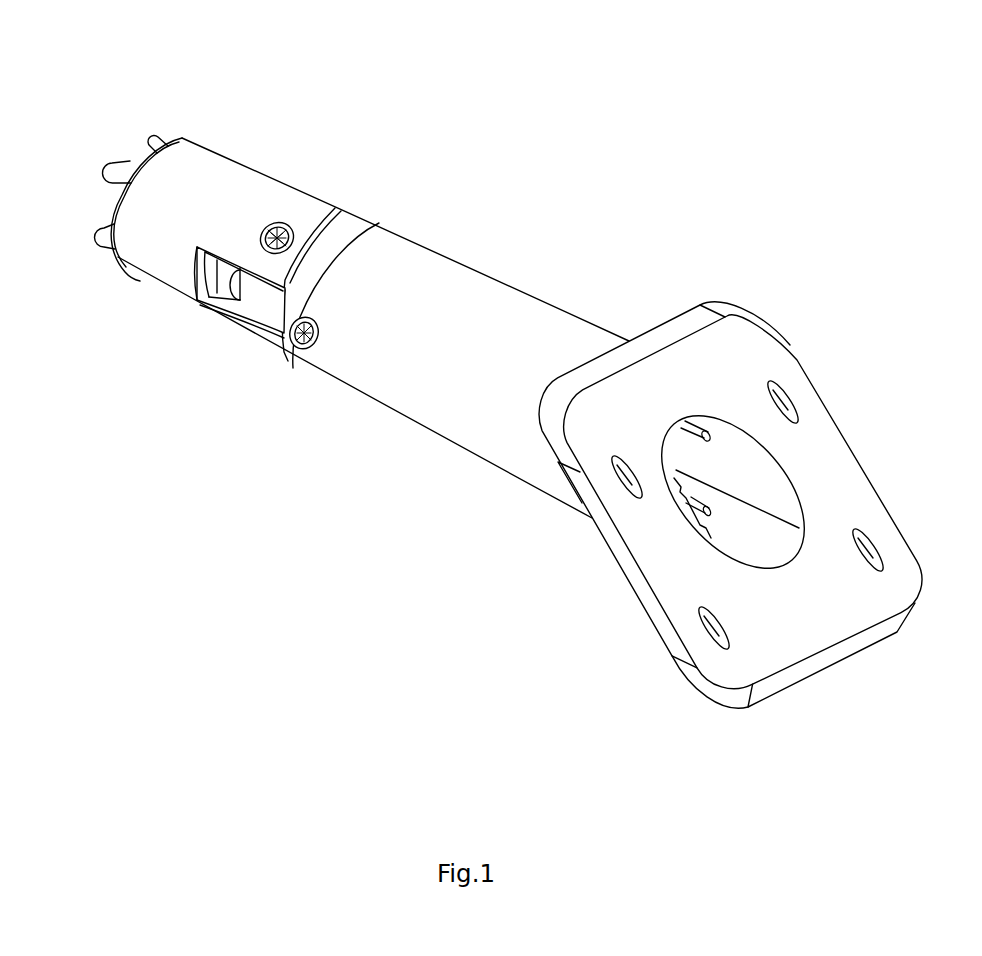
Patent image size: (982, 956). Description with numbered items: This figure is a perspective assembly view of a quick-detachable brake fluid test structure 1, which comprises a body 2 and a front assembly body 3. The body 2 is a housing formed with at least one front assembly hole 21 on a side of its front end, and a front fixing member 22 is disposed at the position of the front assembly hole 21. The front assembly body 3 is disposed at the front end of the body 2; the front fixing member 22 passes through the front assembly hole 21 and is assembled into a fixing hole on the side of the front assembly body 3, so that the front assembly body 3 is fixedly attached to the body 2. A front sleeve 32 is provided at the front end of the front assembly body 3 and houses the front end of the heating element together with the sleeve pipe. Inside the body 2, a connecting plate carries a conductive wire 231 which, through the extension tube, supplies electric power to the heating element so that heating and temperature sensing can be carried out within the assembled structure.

The quick-detachable brake fluid test structure 1 is at (505, 359).
The body 2 is at (505, 385).
The front assembly hole 21 is at (296, 332).
The front fixing member 22 is at (305, 350).
The conductive wire 231 is at (700, 432).
The front assembly body 3 is at (337, 220).
The front sleeve 32 is at (182, 213).